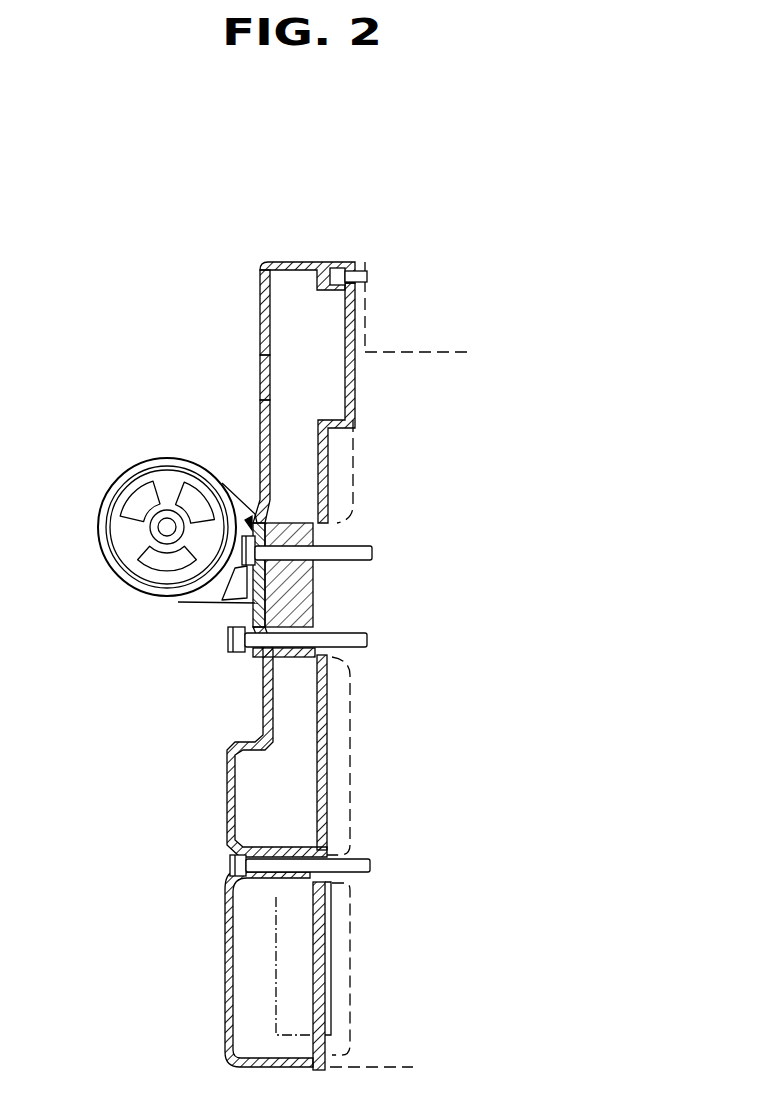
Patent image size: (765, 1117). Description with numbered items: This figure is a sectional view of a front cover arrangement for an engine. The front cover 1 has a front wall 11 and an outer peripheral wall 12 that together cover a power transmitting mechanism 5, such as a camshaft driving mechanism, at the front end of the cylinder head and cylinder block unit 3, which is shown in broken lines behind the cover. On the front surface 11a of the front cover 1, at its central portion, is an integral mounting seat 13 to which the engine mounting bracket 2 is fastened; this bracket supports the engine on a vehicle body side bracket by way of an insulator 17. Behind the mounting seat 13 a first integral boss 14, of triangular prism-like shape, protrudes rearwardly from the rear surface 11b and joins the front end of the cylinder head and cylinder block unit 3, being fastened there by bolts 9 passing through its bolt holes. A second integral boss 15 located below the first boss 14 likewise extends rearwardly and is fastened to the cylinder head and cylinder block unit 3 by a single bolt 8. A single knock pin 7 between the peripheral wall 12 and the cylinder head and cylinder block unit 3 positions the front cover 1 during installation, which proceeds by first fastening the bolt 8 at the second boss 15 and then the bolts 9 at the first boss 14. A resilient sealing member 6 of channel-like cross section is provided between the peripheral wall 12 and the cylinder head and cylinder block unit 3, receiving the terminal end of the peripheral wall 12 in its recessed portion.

The front cover 1 is at (258, 315).
The engine mounting bracket 2 is at (180, 603).
The cylinder head and cylinder block unit 3 is at (352, 668).
The power transmitting mechanism 5 is at (285, 1010).
The resilient sealing member 6 is at (330, 950).
The knock pin 7 is at (368, 278).
The bolt 8 is at (230, 863).
The bolts 9 is at (375, 553).
The front wall 11 is at (260, 440).
The side wall lower portion 11a is at (260, 378).
The rear surface 11b is at (266, 356).
The outer peripheral wall 12 is at (297, 262).
The mounting seat 13 is at (250, 606).
The first integral boss 14 is at (315, 607).
The second integral boss 15 is at (262, 885).
The insulator 17 is at (120, 528).